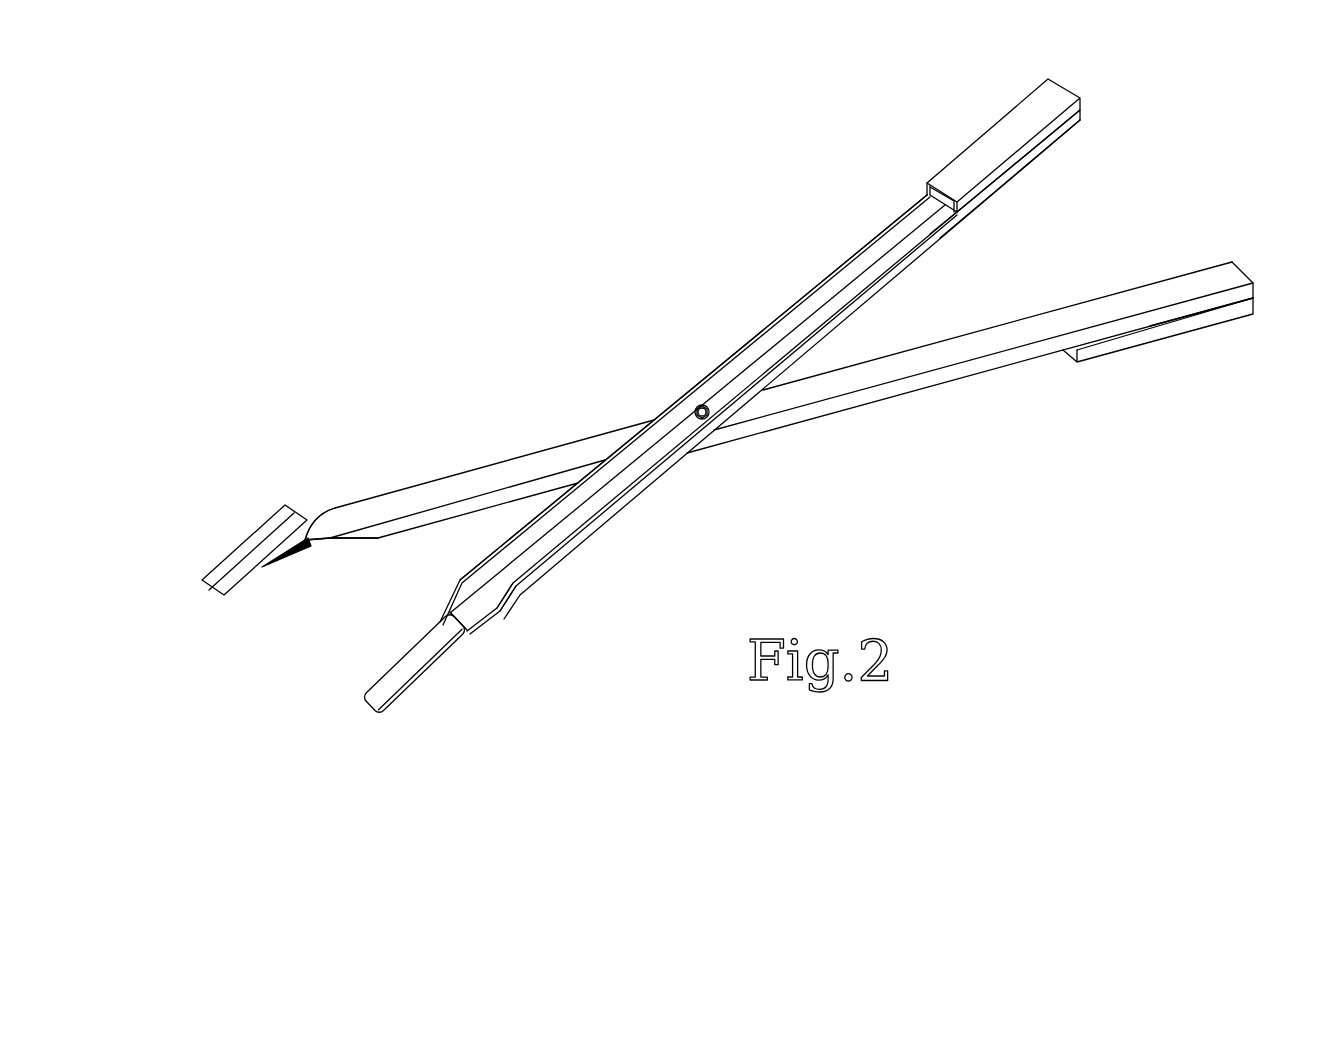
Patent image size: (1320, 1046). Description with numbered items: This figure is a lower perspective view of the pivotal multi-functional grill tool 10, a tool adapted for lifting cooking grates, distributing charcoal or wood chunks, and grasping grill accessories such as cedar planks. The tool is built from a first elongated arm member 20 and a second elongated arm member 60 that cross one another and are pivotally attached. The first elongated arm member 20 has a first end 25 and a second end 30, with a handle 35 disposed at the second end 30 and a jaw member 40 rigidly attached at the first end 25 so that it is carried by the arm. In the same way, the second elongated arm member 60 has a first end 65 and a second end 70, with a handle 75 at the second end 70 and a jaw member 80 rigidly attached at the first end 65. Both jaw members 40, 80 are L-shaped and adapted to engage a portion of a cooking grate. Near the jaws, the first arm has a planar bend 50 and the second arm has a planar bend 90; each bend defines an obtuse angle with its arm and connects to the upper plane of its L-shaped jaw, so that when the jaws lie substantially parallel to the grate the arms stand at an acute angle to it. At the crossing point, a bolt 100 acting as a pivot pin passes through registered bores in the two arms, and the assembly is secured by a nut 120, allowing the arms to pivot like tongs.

The pivotal multi-functional grill tool 10 is at (571, 270).
The first elongated arm member 20 is at (855, 411).
The first end 25 is at (370, 514).
The second end 30 is at (1110, 307).
The handle 35 is at (1181, 325).
The jaw member 40 is at (212, 590).
The planar bend 50 is at (297, 550).
The second elongated arm member 60 is at (649, 489).
The first end 65 is at (514, 585).
The second end 70 is at (956, 222).
The handle 75 is at (980, 155).
The jaw member 80 is at (422, 656).
The planar bend 90 is at (469, 631).
The bolt 100 is at (705, 405).
The nut 120 is at (696, 405).